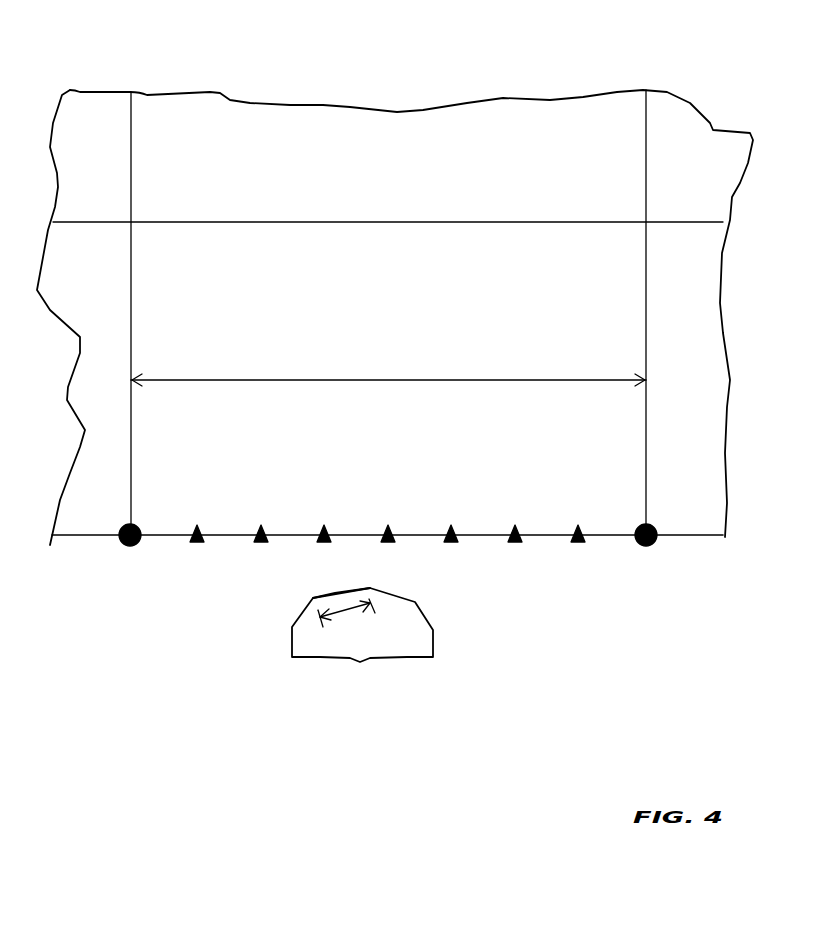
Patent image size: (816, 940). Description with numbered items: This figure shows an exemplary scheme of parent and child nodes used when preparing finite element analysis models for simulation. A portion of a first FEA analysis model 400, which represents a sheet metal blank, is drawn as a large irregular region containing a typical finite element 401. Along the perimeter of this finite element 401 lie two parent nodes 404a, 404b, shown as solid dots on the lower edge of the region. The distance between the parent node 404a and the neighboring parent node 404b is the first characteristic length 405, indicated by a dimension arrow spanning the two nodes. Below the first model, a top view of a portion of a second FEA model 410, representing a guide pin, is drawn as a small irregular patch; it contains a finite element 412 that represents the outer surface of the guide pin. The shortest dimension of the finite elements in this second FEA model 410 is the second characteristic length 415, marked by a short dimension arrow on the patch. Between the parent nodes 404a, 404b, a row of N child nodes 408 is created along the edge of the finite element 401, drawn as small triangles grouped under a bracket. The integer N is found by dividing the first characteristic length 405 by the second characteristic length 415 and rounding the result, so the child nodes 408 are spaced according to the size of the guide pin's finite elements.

The first FEA analysis model 400 is at (423, 112).
The finite element 401 is at (388, 243).
The parent node 404a is at (130, 546).
The parent node 404b is at (643, 549).
The first characteristic length 405 is at (388, 370).
The child nodes 408 is at (197, 514).
The second FEA model 410 is at (288, 657).
The finite element 412 is at (335, 593).
The second characteristic length 415 is at (346, 622).